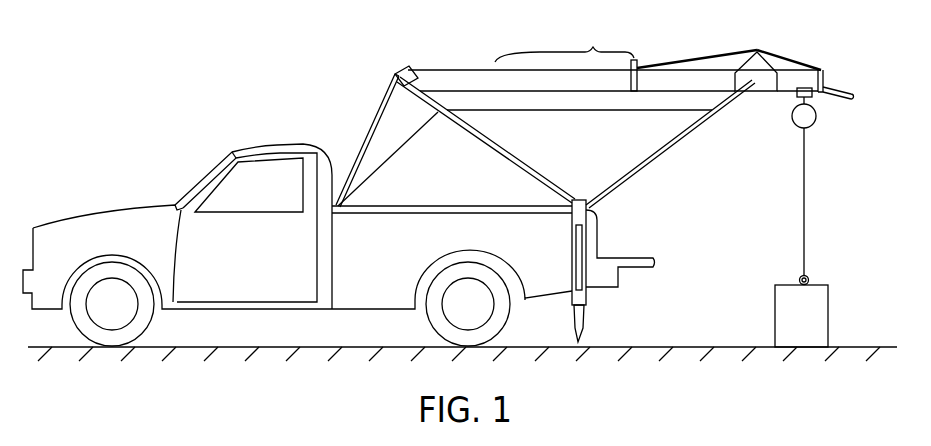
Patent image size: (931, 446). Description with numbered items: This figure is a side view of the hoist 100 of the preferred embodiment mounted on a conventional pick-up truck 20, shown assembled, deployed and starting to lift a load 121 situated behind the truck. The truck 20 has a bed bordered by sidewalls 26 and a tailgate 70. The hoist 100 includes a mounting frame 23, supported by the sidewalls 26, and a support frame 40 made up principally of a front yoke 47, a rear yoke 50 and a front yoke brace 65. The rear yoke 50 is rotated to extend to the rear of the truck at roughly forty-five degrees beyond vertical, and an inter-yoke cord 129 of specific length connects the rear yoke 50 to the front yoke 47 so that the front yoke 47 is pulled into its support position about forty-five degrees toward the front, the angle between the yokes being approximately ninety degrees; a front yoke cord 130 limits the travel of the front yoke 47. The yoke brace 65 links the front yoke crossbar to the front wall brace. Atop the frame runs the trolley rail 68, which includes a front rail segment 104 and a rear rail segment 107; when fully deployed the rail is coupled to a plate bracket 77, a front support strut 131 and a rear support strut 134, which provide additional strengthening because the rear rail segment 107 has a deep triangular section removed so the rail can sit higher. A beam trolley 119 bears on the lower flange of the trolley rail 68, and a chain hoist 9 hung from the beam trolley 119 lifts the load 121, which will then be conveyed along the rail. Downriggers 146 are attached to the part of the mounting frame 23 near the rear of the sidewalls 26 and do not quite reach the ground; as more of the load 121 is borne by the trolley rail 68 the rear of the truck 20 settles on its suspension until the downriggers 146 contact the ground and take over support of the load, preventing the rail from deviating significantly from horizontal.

The pick-up truck 20 is at (297, 243).
The mounting frame 23 is at (400, 195).
The sidewalls 26 is at (488, 246).
The hoist 100 is at (604, 173).
The support frame 40 is at (413, 77).
The front yoke brace 65 is at (385, 108).
The front yoke cord 130 is at (418, 131).
The front yoke 47 is at (500, 156).
The front rail segment 104 is at (465, 82).
The inter-yoke cord 129 is at (622, 115).
The trolley rail 68 is at (564, 40).
The front support strut 131 is at (723, 55).
The rear support strut 134 is at (787, 56).
The plate bracket 77 is at (759, 64).
The rear rail segment 107 is at (811, 80).
The beam trolley 119 is at (788, 93).
The chain hoist 9 is at (811, 122).
The rear yoke 50 is at (654, 156).
The tailgate 70 is at (654, 262).
The downriggers 146 is at (582, 316).
The load 121 is at (813, 312).